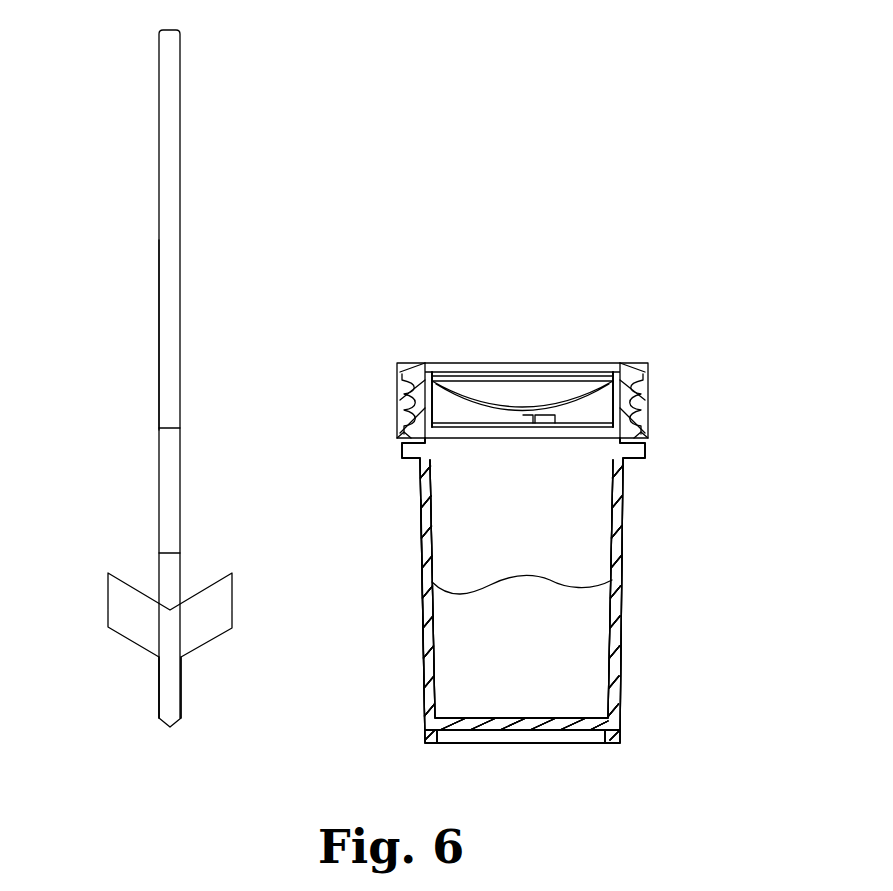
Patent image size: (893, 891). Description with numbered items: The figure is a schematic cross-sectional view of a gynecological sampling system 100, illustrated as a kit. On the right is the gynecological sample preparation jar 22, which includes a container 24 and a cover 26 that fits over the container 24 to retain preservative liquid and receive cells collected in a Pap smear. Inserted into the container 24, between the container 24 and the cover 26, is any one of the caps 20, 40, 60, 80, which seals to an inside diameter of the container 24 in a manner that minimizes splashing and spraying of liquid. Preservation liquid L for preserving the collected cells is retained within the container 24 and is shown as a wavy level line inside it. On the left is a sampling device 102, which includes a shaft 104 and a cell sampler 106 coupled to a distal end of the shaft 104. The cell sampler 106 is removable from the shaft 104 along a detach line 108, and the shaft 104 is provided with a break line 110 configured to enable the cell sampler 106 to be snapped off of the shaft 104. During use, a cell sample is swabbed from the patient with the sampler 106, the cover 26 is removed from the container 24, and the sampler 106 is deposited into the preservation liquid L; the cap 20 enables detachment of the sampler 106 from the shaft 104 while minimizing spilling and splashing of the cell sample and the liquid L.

The gynecological sampling system 100 is at (472, 92).
The sampling device 102 is at (170, 97).
The shaft 104 is at (170, 240).
The cell sampler 106 is at (118, 602).
The detach line 108 is at (165, 552).
The break line 110 is at (165, 426).
The gynecological sample preparation jar 22 is at (657, 345).
The cover 26 is at (411, 365).
The cap 20 is at (590, 418).
The cap 40 is at (523, 557).
The cap 60 is at (523, 557).
The cap 80 is at (523, 557).
The container 24 is at (423, 567).
The preservation liquid L is at (582, 590).